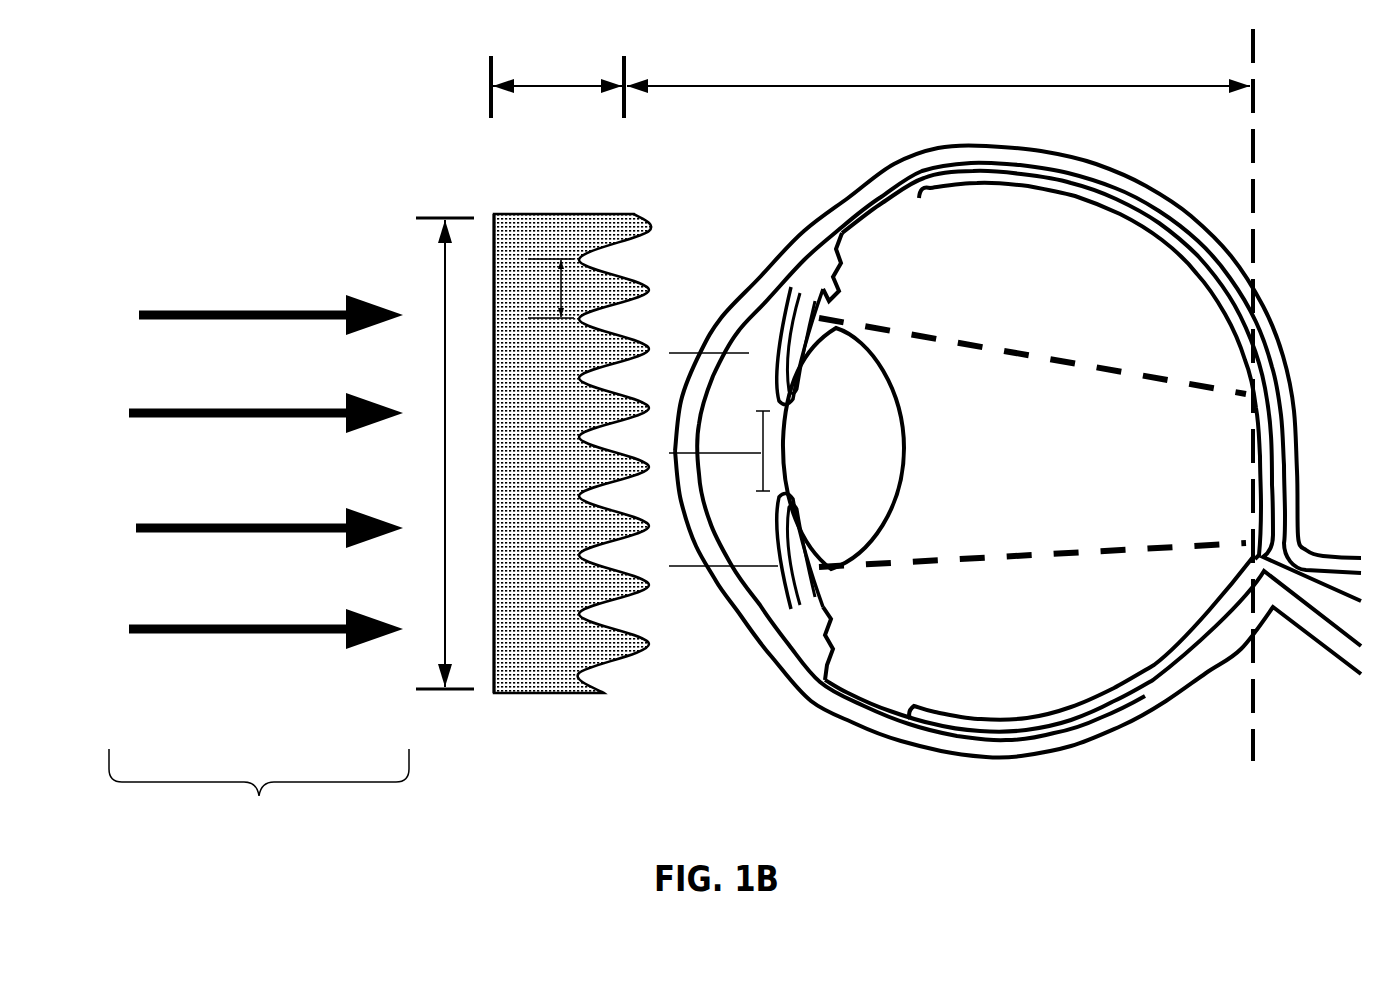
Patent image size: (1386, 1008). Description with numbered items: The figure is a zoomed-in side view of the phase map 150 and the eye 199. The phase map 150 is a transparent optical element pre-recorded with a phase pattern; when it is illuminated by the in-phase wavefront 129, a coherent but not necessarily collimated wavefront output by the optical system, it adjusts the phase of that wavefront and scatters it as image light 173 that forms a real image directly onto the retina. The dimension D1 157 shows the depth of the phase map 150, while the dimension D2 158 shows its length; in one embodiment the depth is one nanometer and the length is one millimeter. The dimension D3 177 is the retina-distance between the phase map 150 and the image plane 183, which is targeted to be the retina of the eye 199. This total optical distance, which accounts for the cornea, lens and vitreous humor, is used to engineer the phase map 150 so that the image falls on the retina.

The in-phase wavefront 129 is at (259, 597).
The phase map 150 is at (540, 692).
The dimension D1 157 is at (557, 78).
The dimension D2 158 is at (445, 453).
The image light 173 is at (1032, 486).
The dimension D3 177 is at (938, 67).
The image plane 183 is at (1245, 765).
The eye 199 is at (1016, 775).